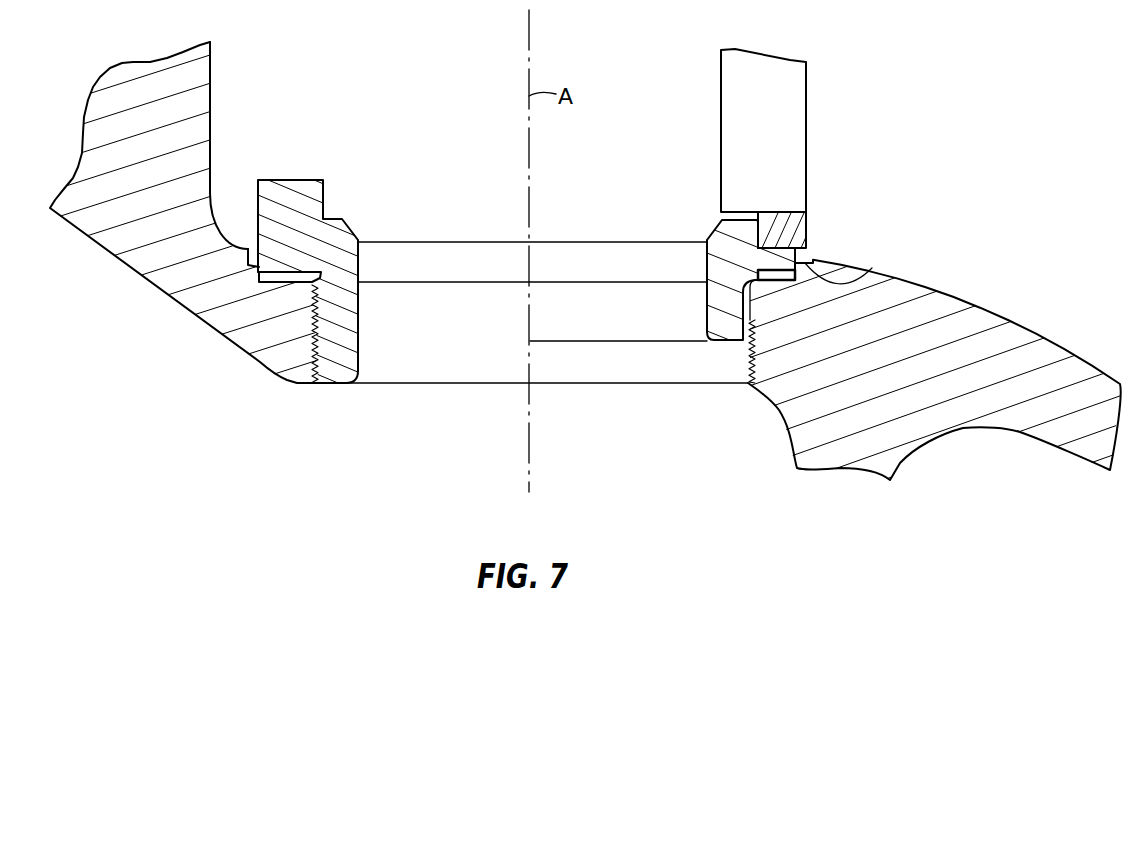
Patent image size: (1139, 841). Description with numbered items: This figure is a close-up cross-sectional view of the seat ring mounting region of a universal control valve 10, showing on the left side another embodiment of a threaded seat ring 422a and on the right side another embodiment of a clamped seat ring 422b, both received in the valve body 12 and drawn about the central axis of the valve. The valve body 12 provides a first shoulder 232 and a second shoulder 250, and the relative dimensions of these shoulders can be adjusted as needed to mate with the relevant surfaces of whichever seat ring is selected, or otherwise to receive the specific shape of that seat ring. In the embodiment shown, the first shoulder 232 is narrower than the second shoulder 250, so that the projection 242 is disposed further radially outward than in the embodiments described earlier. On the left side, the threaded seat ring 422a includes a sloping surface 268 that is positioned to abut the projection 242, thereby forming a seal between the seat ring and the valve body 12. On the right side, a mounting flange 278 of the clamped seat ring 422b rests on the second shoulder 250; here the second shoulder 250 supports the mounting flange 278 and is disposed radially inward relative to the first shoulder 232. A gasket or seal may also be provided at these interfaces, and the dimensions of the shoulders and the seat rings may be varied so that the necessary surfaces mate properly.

The universal control valve 10 is at (850, 98).
The valve body 12 is at (940, 303).
The first shoulder 232 is at (173, 300).
The projection 242 is at (260, 267).
The second shoulder 250 is at (285, 285).
The sloping surface 268 is at (259, 271).
The mounting flange 278 is at (781, 262).
The threaded seat ring 422a is at (337, 370).
The clamped seat ring 422b is at (723, 330).